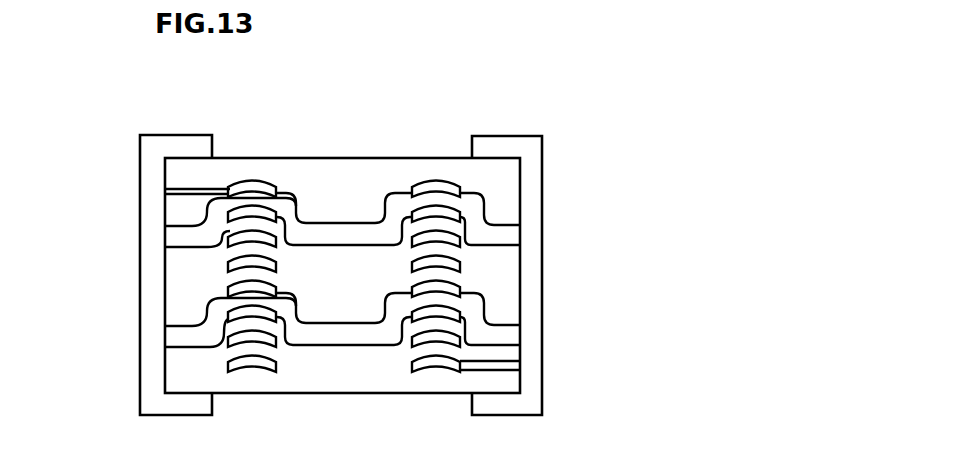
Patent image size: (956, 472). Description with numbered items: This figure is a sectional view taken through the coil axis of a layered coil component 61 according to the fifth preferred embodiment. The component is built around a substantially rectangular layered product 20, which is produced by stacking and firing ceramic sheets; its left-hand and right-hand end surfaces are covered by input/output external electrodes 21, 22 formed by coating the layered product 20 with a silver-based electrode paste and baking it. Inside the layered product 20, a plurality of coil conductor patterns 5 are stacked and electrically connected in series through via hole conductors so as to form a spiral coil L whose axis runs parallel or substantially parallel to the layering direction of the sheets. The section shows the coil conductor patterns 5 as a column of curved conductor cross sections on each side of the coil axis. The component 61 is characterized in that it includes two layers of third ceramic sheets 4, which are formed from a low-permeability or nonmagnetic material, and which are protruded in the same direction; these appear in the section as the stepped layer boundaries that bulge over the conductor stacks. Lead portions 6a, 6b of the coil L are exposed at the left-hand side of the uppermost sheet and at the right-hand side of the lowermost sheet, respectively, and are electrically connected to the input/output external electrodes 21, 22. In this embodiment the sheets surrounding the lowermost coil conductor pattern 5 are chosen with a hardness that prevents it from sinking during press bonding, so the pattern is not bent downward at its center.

The layered coil component 61 is at (180, 93).
The layered product 20 is at (498, 207).
The input/output external electrode 21 is at (160, 150).
The input/output external electrode 22 is at (533, 153).
The third ceramic sheet 4 is at (289, 259).
The coil conductor pattern 5 is at (237, 262).
The lead portion 6a is at (165, 190).
The lead portion 6b is at (520, 365).
The coil L is at (413, 176).